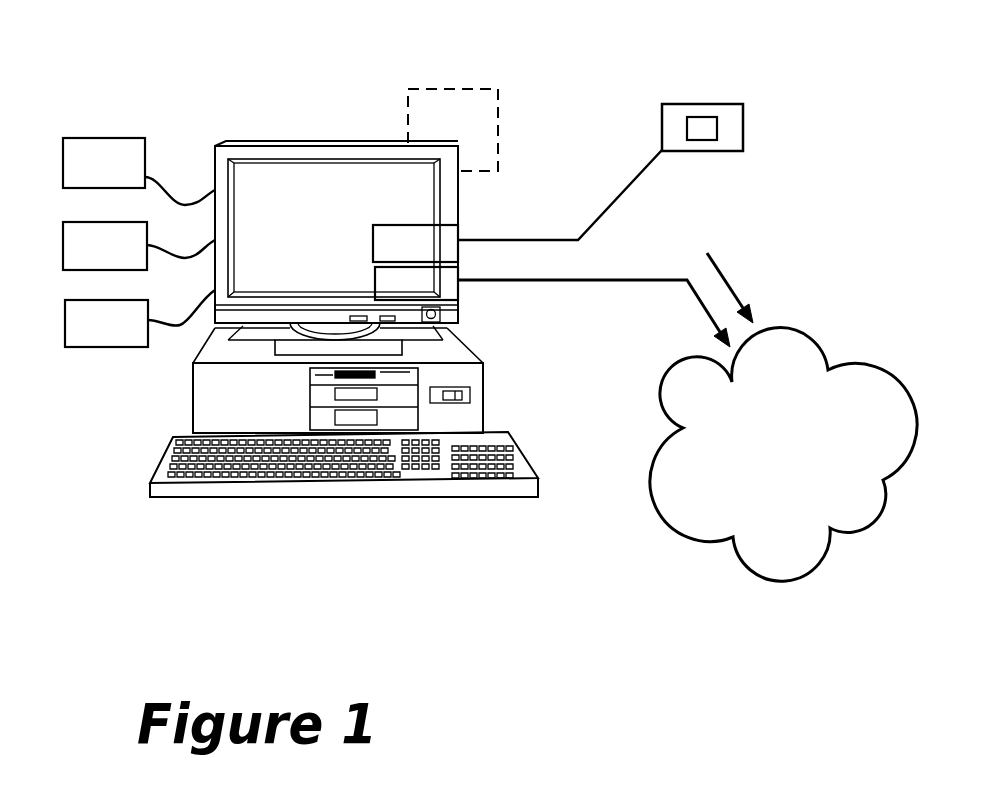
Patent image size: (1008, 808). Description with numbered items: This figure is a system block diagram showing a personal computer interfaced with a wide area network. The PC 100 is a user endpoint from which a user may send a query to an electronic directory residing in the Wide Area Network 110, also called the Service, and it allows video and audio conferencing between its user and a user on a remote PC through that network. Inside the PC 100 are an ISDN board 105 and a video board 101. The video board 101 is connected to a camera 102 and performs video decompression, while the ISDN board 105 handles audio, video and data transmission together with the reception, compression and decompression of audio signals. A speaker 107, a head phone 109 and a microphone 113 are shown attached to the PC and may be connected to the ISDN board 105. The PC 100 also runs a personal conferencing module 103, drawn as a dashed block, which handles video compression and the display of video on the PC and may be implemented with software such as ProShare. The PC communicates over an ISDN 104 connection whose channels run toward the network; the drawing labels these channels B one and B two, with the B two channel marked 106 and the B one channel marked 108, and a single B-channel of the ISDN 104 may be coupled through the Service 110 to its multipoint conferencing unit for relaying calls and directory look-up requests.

The PC 100 is at (342, 136).
The video board 101 is at (415, 243).
The camera 102 is at (690, 104).
The personal conferencing module 103 is at (453, 130).
The ISDN 104 is at (589, 314).
The ISDN board 105 is at (416, 283).
The B2 channel 106 is at (763, 275).
The speaker 107 is at (139, 171).
The B1 channel 108 is at (685, 317).
The head phone 109 is at (139, 246).
The Wide Area Network (WAN) 110 is at (768, 580).
The microphone 113 is at (140, 318).